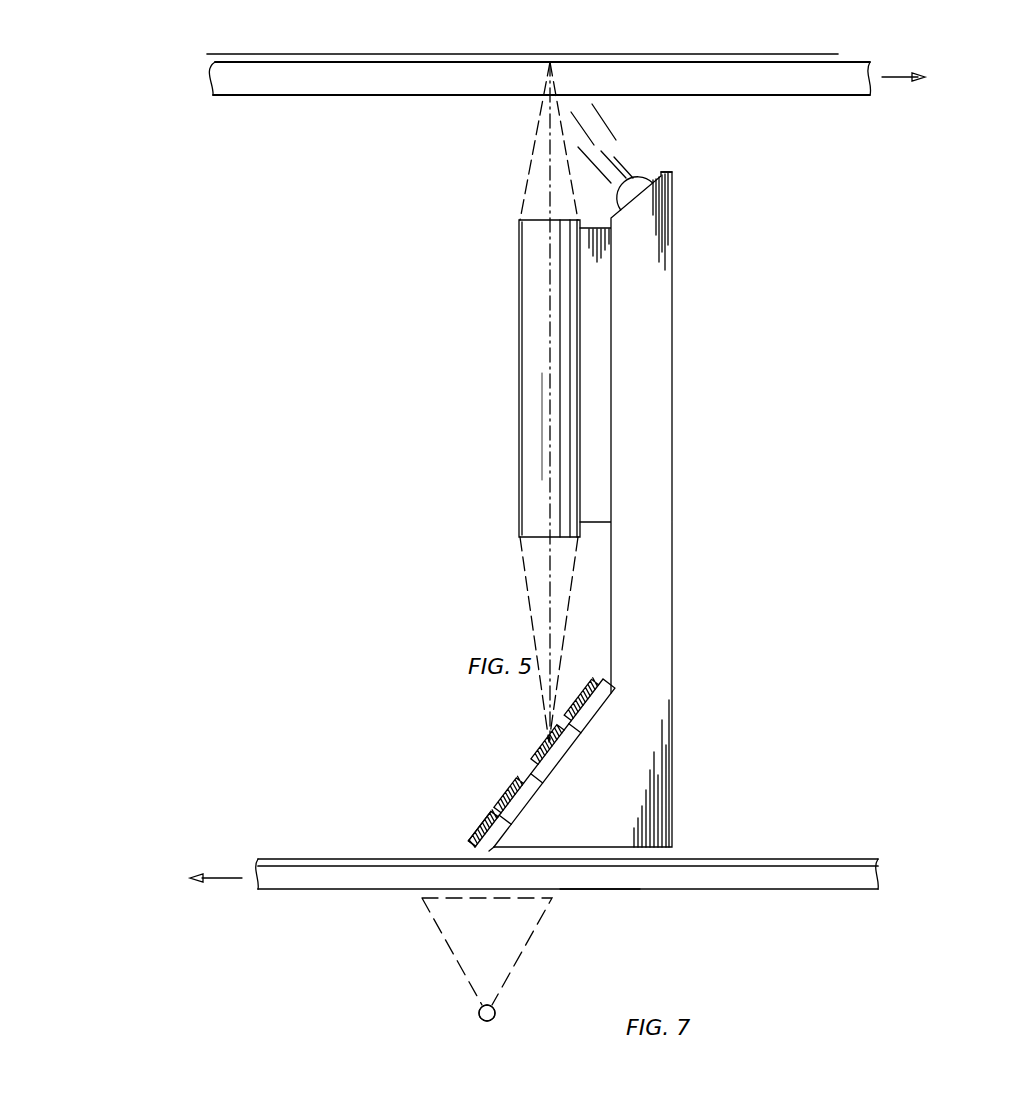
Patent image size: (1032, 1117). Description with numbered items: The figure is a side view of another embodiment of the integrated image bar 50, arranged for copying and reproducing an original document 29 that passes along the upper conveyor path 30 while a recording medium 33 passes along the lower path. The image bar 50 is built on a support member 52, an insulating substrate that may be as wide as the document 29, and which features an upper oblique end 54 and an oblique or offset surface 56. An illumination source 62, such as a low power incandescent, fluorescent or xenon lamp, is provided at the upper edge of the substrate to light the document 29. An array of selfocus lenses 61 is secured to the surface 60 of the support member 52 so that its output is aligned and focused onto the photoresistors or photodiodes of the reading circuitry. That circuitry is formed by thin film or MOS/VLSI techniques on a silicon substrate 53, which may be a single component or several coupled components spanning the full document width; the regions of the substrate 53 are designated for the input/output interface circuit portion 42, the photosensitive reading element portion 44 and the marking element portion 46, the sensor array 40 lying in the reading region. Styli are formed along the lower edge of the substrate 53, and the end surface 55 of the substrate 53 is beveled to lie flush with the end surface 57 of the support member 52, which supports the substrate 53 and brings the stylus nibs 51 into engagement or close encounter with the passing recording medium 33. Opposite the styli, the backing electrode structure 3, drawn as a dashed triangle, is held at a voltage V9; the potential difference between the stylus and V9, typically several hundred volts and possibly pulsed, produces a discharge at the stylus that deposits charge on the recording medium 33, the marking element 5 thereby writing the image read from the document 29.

The document 29 is at (667, 54).
The upper conveyor belt 30 is at (407, 97).
The recording medium 33 is at (813, 884).
The image bar 50 is at (509, 358).
The selfocus lenses 61 is at (528, 410).
The illumination source 62 is at (637, 178).
The support member 52 is at (672, 410).
The upper oblique end 54 is at (661, 170).
The surface 60 is at (617, 506).
The sensor array 40 is at (523, 745).
The substrate 53 is at (540, 781).
The input/output interface circuit portion 42 is at (593, 690).
The photosensitive reading element portion 44 is at (547, 745).
The marking element portion 46 is at (522, 789).
The oblique or offset surface 56 is at (504, 815).
The sensor element 5 is at (494, 832).
The stylus nibs 51 is at (476, 846).
The end surface 55 is at (488, 848).
The end surface 57 is at (598, 850).
The backing electrode structure 3 is at (522, 948).
The backing electrode voltage V9 is at (502, 1024).